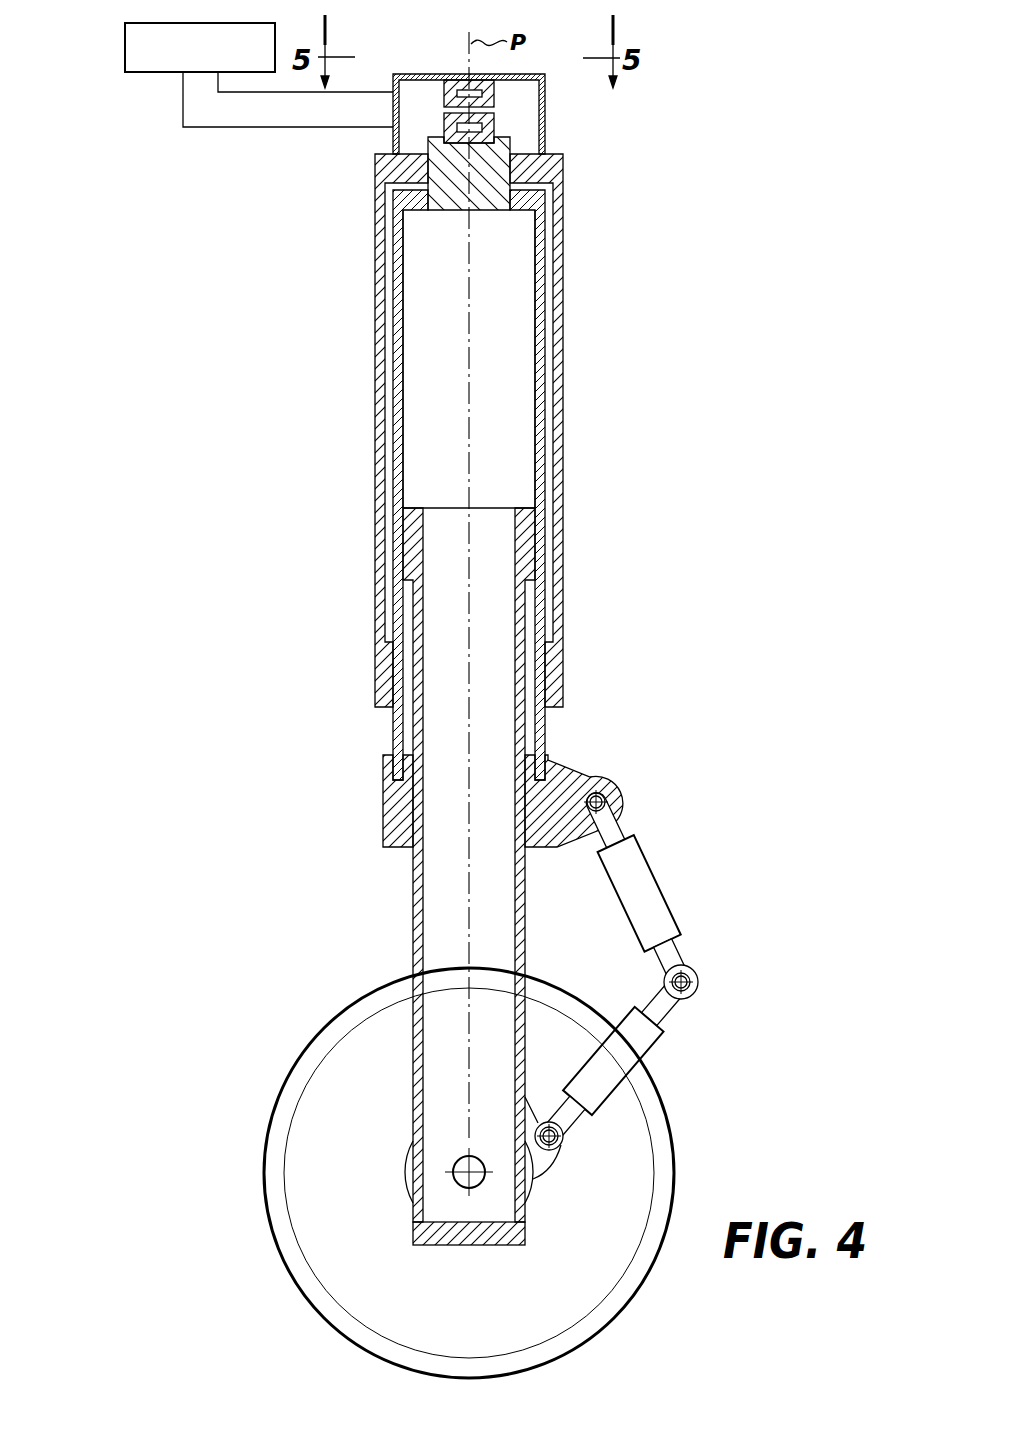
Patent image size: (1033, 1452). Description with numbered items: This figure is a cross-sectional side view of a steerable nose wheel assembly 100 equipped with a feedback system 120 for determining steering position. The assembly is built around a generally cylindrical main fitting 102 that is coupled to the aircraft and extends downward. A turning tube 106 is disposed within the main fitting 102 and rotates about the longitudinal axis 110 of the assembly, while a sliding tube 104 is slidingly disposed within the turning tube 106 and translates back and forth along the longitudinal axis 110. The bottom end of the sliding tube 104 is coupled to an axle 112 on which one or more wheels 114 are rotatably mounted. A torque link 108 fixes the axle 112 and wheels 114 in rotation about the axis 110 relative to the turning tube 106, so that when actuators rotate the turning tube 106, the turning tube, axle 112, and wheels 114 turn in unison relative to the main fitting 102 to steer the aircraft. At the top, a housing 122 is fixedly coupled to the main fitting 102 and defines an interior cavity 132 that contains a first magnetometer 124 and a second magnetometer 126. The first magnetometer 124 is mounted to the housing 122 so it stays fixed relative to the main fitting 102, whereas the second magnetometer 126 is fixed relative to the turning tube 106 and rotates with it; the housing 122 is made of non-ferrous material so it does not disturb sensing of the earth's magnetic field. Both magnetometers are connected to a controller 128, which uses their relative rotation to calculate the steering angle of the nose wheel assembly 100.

The steerable nose wheel assembly 100 is at (675, 104).
The main fitting 102 is at (375, 313).
The sliding tube 104 is at (413, 1045).
The turning tube 106 is at (383, 812).
The torque link 108 is at (712, 916).
The longitudinal axis 110 is at (471, 358).
The axle 112 is at (463, 1170).
The wheels 114 is at (675, 1126).
The feedback system 120 is at (540, 58).
The housing 122 is at (548, 115).
The first magnetometer 124 is at (495, 88).
The second magnetometer 126 is at (495, 125).
The controller 128 is at (125, 45).
The interior cavity 132 is at (408, 137).